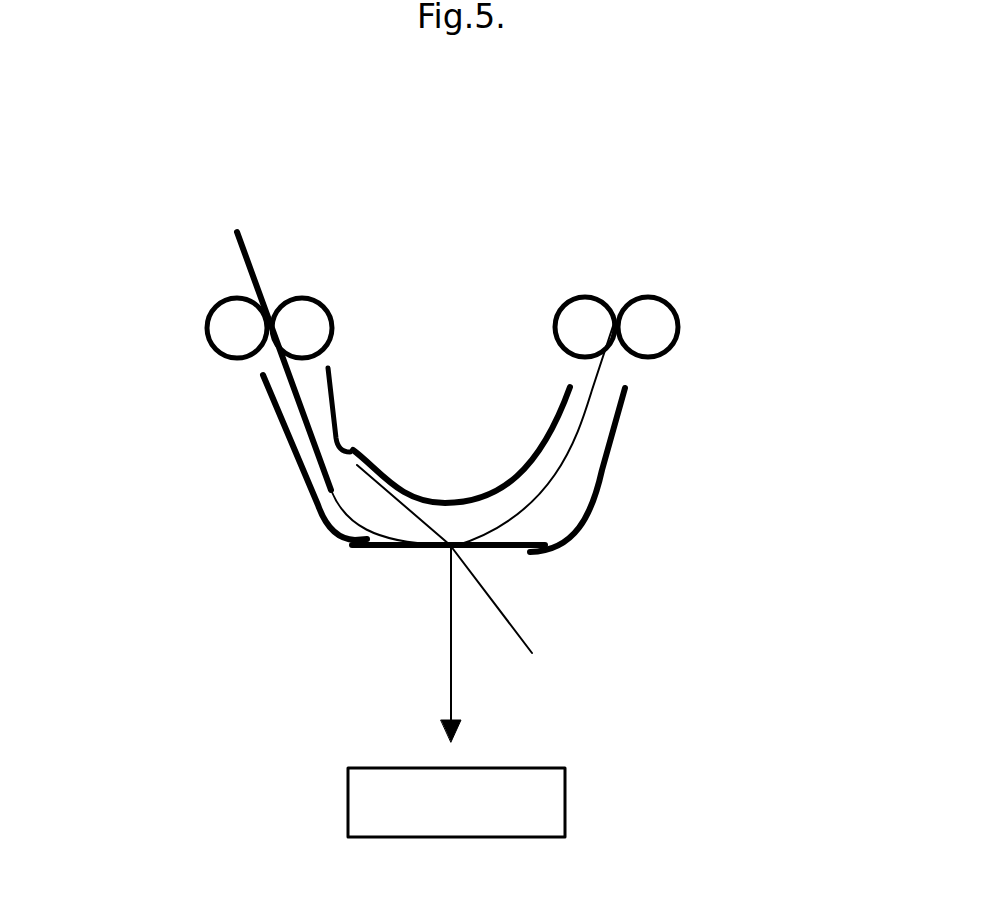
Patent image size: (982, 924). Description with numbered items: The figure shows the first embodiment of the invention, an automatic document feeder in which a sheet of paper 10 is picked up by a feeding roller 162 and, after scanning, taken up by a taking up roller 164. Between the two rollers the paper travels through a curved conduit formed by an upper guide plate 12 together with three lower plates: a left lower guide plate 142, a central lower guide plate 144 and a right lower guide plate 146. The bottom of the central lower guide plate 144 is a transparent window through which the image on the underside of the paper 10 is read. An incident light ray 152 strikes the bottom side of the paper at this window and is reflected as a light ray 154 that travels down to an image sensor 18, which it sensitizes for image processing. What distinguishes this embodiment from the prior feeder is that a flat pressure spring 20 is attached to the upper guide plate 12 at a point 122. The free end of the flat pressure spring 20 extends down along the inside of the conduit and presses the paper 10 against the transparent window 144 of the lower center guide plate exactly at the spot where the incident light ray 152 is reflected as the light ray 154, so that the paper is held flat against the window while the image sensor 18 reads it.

The sheet of paper 10 is at (245, 242).
The upper guide plate 12 is at (335, 392).
The image sensor 18 is at (555, 787).
The flat pressure spring 20 is at (377, 480).
The point at the upper guide plate 122 is at (360, 442).
The left lower guide plate 142 is at (290, 458).
The central lower guide plate 144 is at (383, 553).
The right lower guide plate 146 is at (600, 477).
The incident light ray 152 is at (525, 638).
The reflected light ray 154 is at (447, 630).
The feeding roller 162 is at (307, 317).
The taking up roller 164 is at (588, 315).